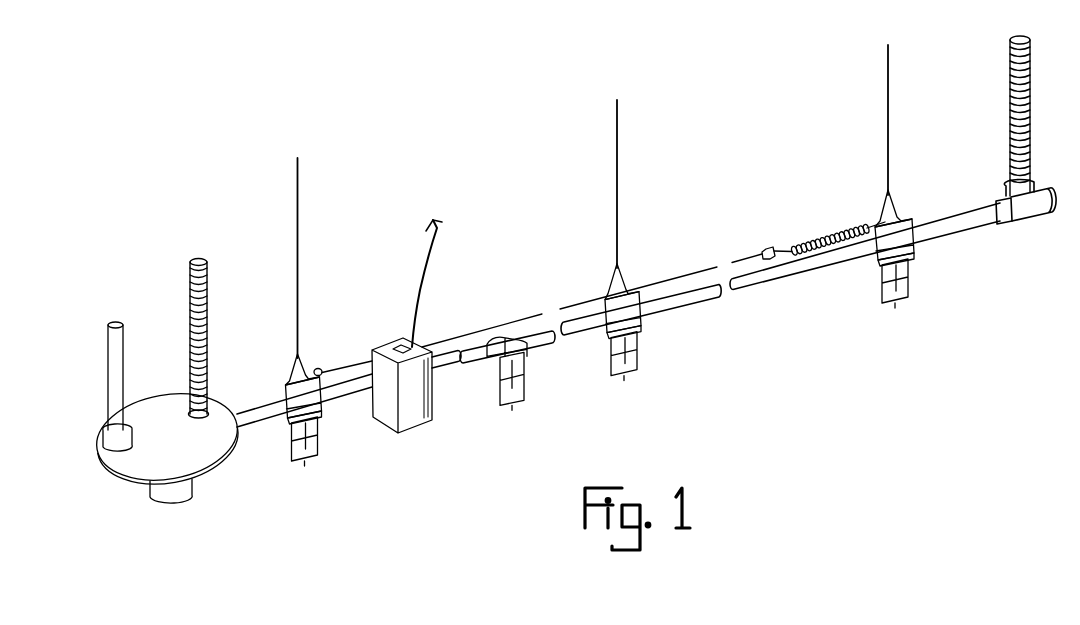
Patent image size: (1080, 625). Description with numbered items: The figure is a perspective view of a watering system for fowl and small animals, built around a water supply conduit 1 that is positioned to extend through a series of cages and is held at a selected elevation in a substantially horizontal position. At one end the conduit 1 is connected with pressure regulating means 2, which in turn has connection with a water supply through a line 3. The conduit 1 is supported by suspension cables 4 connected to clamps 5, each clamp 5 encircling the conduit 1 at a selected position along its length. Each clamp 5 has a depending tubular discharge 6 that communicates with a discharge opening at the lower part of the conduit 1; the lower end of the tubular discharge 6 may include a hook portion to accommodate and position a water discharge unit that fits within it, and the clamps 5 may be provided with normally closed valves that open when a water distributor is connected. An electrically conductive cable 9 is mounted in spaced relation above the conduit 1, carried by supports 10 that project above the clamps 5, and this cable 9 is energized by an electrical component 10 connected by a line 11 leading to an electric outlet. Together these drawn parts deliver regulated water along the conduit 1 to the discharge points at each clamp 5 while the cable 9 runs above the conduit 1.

The water supply conduit 1 is at (952, 227).
The pressure regulating means 2 is at (207, 459).
The line 3 is at (120, 345).
The suspension cables 4 is at (301, 264).
The clamps 5 is at (322, 414).
The depending tubular discharge 6 is at (295, 428).
The electrically conductive cable 9 is at (525, 317).
The supports / electrical component 10 is at (292, 386).
The line 11 is at (436, 258).